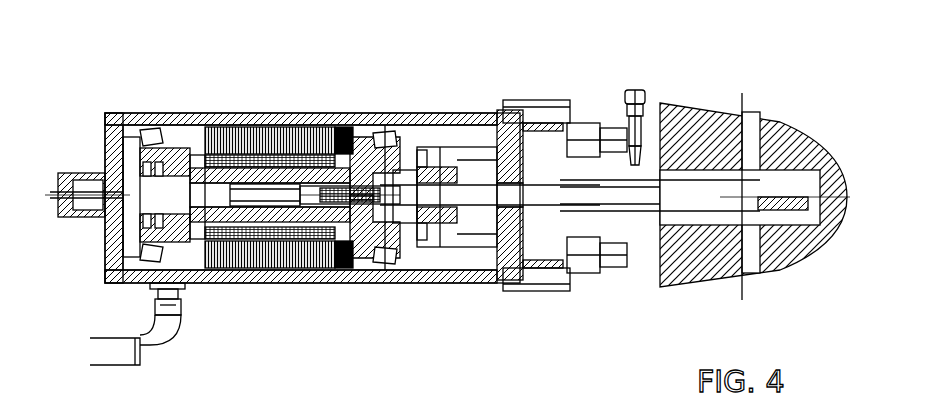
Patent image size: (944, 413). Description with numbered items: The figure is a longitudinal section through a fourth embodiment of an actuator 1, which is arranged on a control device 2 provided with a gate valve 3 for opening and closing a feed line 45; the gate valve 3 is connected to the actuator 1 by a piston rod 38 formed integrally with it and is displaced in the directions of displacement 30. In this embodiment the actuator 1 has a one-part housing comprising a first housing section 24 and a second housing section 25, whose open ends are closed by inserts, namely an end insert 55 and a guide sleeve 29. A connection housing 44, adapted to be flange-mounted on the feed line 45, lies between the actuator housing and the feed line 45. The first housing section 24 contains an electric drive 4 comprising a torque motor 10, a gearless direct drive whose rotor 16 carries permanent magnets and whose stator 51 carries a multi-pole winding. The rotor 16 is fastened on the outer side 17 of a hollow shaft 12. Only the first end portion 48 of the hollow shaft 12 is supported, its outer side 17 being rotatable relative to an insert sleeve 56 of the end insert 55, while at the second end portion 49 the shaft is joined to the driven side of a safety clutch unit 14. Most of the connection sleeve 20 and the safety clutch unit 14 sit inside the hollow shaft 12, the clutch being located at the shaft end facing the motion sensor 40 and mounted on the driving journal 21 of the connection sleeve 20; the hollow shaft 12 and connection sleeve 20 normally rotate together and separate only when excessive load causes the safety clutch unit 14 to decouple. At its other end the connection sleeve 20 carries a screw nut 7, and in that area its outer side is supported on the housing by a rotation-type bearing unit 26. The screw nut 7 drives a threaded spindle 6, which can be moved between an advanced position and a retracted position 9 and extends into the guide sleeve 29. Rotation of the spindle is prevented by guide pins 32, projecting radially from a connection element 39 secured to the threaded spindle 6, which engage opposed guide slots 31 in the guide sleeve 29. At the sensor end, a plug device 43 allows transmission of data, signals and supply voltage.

The actuator 1 is at (362, 60).
The control device 2 is at (693, 93).
The gate valve 3 is at (790, 213).
The electric drive 4 is at (312, 172).
The torque motor 10 is at (236, 112).
The threaded spindle 6 is at (244, 256).
The retracted position 9 is at (197, 197).
The screw nut 7 is at (393, 112).
The hollow shaft 12 is at (230, 284).
The safety clutch unit 14 is at (120, 163).
The rotor 16 is at (258, 284).
The outer side 17 is at (170, 112).
The connection sleeve 20 is at (355, 284).
The driving journal 21 is at (310, 284).
The first housing section 24 is at (253, 129).
The second housing section 25 is at (270, 195).
The rotation-type bearing unit 26 is at (392, 284).
The guide sleeve 29 is at (548, 116).
The directions of displacement 30 is at (886, 197).
The guide slot 31 is at (462, 112).
The guide pin 32 is at (421, 112).
The piston rod 38 is at (590, 272).
The connection element 39 is at (476, 112).
The motion sensor 40 is at (53, 206).
The plug device 43 is at (186, 300).
The connection housing 44 is at (598, 108).
The feed line 45 is at (748, 126).
The first end portion 48 is at (138, 284).
The second end portion 49 is at (310, 112).
The stator 51 is at (278, 112).
The end insert 55 is at (105, 265).
The insert sleeve 56 is at (128, 112).